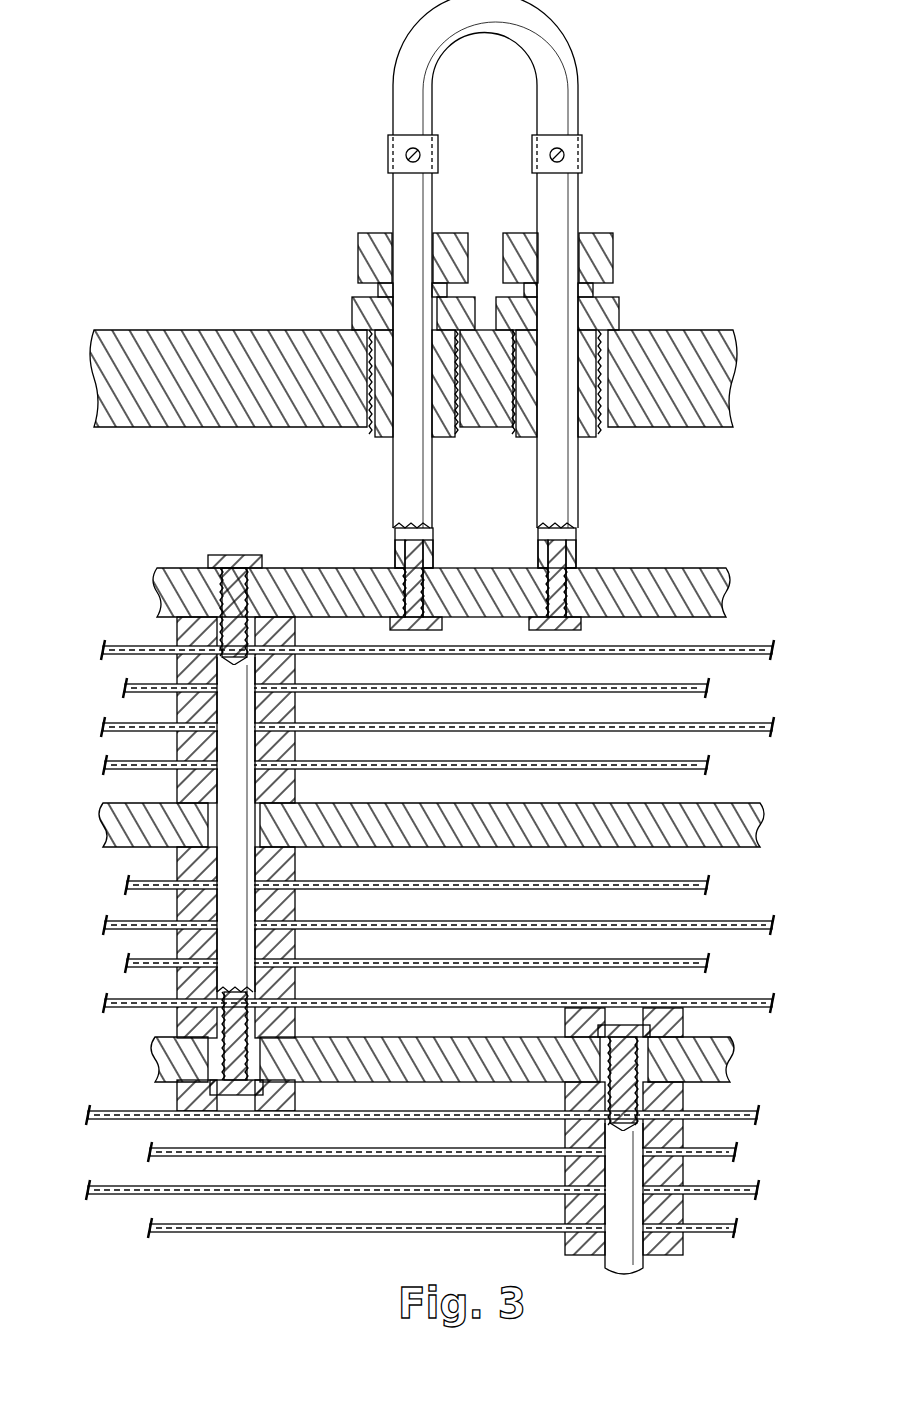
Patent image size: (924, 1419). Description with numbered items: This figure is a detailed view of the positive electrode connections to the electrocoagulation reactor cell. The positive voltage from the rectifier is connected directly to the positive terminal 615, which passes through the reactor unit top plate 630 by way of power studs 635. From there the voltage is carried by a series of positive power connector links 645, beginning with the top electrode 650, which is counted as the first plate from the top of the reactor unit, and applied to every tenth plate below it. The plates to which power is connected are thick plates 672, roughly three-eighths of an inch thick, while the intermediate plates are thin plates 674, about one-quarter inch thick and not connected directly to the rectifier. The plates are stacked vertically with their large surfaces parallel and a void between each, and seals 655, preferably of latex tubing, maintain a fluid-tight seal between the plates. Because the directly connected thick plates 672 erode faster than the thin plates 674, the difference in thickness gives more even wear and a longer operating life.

The positive terminal 615 is at (548, 36).
The power studs 635 is at (435, 203).
The reactor unit top plate 630 is at (243, 330).
The top electrode 650 is at (728, 585).
The positive power connector links 645 is at (217, 633).
The seals 655 is at (177, 717).
The thin plates 674 is at (705, 690).
The thick plates 672 is at (768, 828).